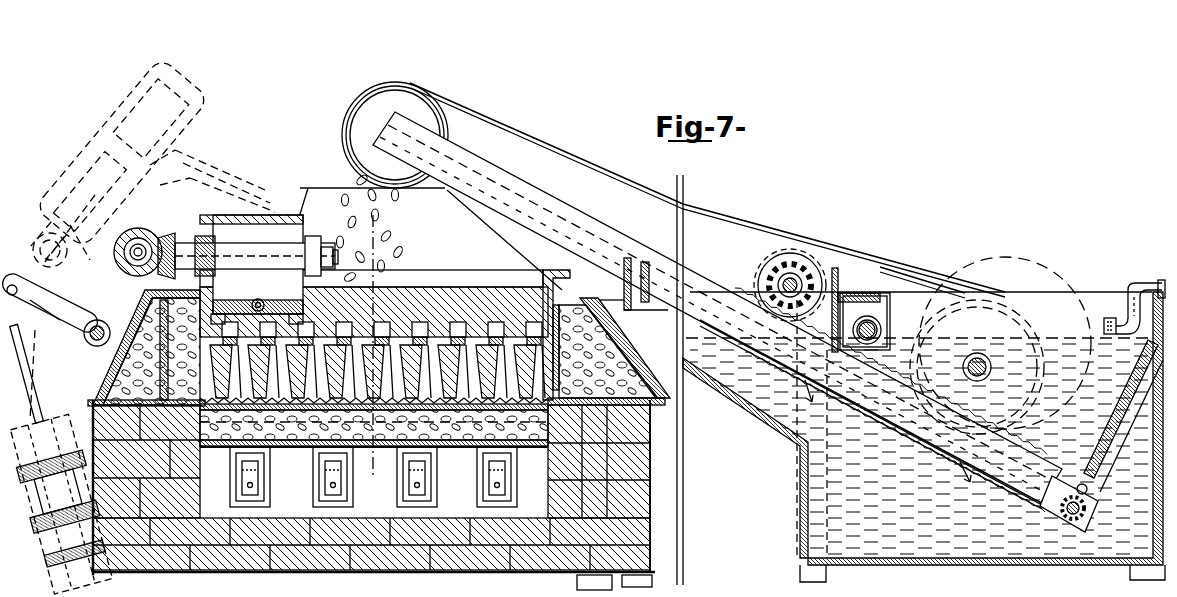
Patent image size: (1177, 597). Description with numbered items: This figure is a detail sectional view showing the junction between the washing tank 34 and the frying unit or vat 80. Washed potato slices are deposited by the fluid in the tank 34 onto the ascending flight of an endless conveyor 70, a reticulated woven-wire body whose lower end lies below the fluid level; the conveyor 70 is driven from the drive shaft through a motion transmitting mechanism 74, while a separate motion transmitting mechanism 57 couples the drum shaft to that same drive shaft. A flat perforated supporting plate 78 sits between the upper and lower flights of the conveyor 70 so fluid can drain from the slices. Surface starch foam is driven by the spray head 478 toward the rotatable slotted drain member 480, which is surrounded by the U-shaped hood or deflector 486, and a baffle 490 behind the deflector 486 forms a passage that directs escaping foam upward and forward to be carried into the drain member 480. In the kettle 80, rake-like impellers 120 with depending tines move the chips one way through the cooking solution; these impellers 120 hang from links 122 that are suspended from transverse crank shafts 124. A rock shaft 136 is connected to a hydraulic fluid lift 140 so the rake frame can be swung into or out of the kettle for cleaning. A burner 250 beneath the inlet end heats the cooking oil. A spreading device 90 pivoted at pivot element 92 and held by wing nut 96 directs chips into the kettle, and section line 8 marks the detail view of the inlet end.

The crank shafts 124 is at (318, 243).
The links 122 is at (292, 306).
The impellers 120 is at (461, 292).
The section line 8- 8 is at (380, 219).
The motion transmitting mechanism 74 is at (651, 200).
The supporting plate 78 is at (704, 296).
The endless conveyor 70 is at (705, 340).
The baffle 490 is at (818, 268).
The motion transmitting mechanism 57 is at (868, 300).
The drain member 480 is at (873, 328).
The hood or deflector 486 is at (882, 293).
The spray head 478 is at (1110, 318).
The tank 34 is at (798, 489).
The frying unit or vat 80 is at (460, 441).
The burner 250 is at (506, 500).
The rock shaft 136 is at (95, 350).
The hydraulic fluid lift 140 is at (92, 560).
The wing nut 96 is at (966, 596).
The pivot element 92 is at (1003, 596).
The spreading device 90 is at (1082, 583).